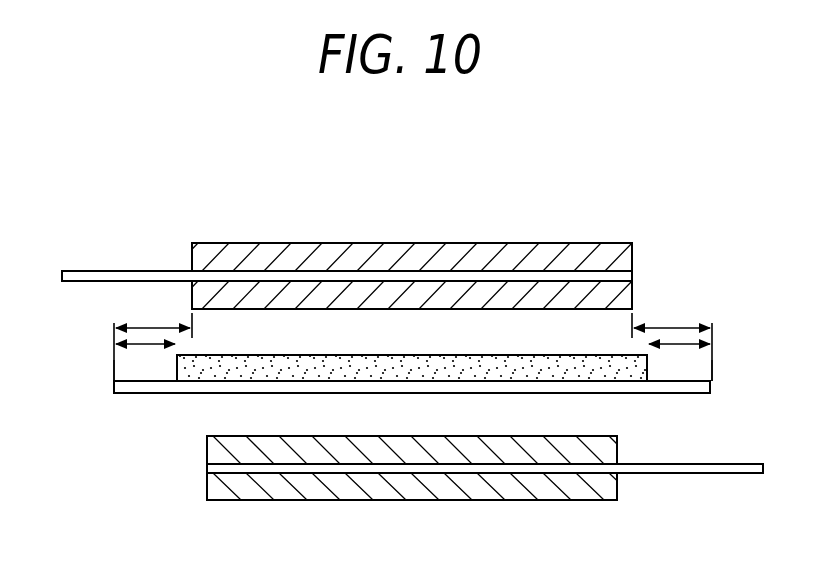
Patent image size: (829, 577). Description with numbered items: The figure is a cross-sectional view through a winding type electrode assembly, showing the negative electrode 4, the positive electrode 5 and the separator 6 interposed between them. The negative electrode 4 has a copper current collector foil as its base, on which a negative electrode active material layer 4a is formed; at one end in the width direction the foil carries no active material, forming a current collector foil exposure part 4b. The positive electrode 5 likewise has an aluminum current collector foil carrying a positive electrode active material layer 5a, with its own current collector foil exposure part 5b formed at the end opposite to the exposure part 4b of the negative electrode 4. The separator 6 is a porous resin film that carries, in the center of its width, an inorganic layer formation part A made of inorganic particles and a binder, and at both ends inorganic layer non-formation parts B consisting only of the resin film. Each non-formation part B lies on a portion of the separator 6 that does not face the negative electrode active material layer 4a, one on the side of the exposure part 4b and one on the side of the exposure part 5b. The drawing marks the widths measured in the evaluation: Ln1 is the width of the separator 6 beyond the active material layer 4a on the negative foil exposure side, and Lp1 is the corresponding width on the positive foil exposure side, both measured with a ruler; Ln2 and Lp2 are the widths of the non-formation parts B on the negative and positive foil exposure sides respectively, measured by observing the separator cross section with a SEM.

The negative electrode 4 is at (341, 250).
The negative electrode active material layer 4a is at (414, 243).
The current collector foil exposure part 4b is at (132, 270).
The positive electrode 5 is at (492, 495).
The positive electrode active material layer 5a is at (412, 502).
The current collector foil exposure part 5b is at (688, 476).
The separator 6 is at (712, 387).
The inorganic layer formation part A is at (396, 355).
The inorganic layer non-formation part B is at (138, 380).
The width of separator part not facing negative electrode active material layer on n Ln1 is at (153, 341).
The width of inorganic layer non-formation part on negative foil exposure side Ln2 is at (145, 348).
The width of separator part not facing negative electrode active material layer on p Lp1 is at (672, 341).
The width of inorganic layer non-formation part on positive foil exposure side Lp2 is at (680, 348).